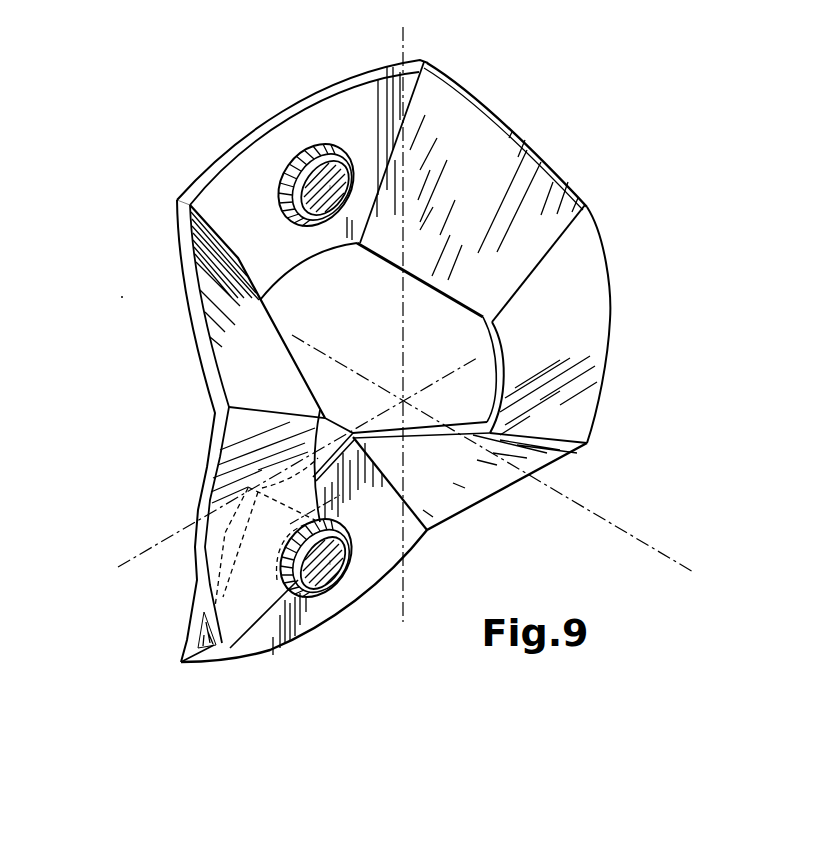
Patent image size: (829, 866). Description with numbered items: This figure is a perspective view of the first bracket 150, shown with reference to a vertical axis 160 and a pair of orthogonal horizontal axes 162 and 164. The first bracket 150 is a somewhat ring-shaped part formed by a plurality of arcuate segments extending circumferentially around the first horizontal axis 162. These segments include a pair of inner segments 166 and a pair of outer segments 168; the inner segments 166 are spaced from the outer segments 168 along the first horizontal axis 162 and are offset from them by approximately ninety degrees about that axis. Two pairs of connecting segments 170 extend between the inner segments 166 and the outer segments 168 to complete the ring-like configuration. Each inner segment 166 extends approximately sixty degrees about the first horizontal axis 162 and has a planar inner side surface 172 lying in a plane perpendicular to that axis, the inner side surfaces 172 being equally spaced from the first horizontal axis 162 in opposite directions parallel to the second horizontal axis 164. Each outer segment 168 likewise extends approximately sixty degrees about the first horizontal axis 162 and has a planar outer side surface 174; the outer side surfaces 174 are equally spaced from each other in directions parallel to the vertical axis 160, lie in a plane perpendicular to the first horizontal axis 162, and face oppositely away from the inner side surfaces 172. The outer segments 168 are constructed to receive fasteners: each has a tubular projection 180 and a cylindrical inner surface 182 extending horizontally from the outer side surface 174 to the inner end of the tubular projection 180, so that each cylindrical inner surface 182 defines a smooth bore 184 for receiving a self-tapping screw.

The first bracket 150 is at (168, 70).
The vertical axis 160 is at (403, 44).
The first horizontal axis 162 is at (633, 538).
The second horizontal axis 164 is at (177, 533).
The inner segment 166 is at (607, 250).
The outer segment 168 is at (301, 92).
The connecting segment 170 is at (487, 106).
The inner side surface 172 is at (593, 343).
The outer side surface 174 is at (240, 173).
The tubular projection 180 is at (307, 223).
The cylindrical inner surface 182 is at (333, 173).
The smooth bore 184 is at (343, 193).